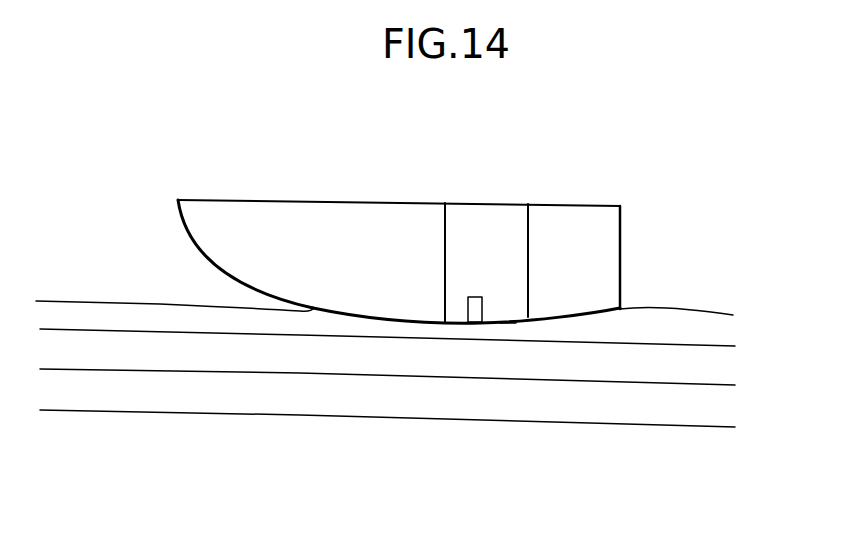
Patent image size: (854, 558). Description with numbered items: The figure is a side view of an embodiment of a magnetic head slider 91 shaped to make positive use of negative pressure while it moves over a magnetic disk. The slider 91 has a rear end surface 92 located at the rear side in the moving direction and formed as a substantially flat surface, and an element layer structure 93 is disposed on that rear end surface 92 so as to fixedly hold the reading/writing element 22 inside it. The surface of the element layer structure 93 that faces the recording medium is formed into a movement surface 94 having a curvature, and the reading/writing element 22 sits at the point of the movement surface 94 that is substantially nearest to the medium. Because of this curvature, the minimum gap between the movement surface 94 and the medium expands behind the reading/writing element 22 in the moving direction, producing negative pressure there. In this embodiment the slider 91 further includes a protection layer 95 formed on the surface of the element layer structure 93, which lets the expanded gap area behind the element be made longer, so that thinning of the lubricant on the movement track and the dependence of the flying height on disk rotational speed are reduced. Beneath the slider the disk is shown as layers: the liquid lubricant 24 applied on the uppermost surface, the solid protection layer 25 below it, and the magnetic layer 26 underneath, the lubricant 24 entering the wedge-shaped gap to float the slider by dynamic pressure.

The reading/writing element 22 is at (477, 322).
The liquid lubricant 24 is at (665, 323).
The protection layer 25 is at (727, 360).
The magnetic layer 26 is at (720, 408).
The slider 91 is at (308, 232).
The rear end surface 92 is at (447, 232).
The element layer structure 93 is at (510, 235).
The movement surface 94 is at (507, 323).
The protection layer 95 is at (595, 228).